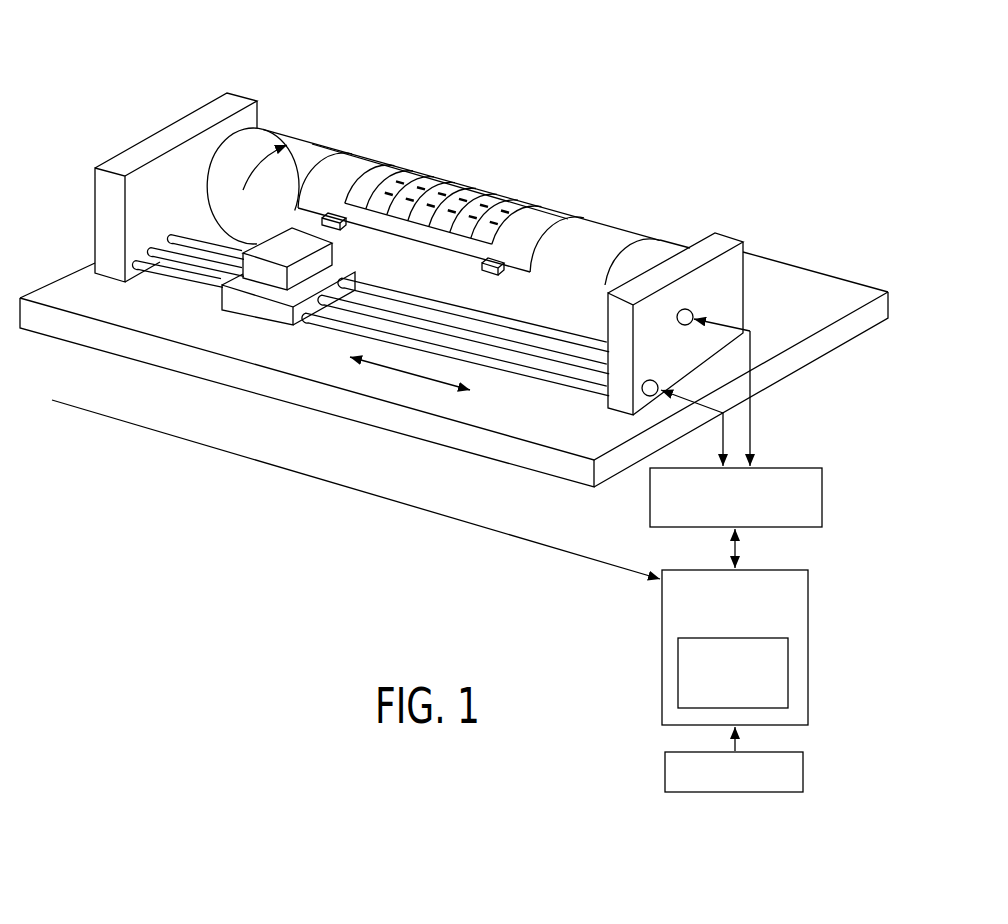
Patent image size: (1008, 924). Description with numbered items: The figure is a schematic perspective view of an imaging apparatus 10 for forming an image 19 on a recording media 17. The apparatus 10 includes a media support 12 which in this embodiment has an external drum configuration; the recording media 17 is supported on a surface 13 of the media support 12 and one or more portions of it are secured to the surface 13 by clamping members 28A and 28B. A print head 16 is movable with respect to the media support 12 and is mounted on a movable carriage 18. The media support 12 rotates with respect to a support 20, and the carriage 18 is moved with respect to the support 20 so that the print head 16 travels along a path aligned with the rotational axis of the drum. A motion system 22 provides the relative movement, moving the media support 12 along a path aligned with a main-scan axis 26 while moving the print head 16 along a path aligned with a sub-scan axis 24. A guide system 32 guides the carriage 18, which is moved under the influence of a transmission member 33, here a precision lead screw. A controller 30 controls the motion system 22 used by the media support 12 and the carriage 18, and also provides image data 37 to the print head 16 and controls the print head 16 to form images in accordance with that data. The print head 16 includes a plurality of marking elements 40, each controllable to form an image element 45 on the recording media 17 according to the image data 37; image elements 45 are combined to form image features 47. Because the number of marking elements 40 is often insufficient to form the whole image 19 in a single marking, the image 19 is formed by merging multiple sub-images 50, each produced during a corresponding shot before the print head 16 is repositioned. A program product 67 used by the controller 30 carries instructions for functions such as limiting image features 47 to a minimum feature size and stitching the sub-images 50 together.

The apparatus 10 is at (333, 71).
The media support 12 is at (662, 248).
The surface 13 is at (593, 227).
The print head 16 is at (255, 274).
The recording media 17 is at (352, 165).
The carriage 18 is at (284, 314).
The image 19 is at (347, 190).
The support 20 is at (558, 436).
The motion system 22 is at (822, 497).
The sub-scan axis 24 is at (408, 376).
The main-scan axis 26 is at (245, 218).
The clamping member 28A is at (325, 215).
The clamping member 28B is at (545, 207).
The controller 30 is at (810, 600).
The guide system 32 is at (525, 335).
The transmission member 33 is at (553, 362).
The image data 37 is at (805, 772).
The marking elements 40 is at (300, 213).
The image element 45 is at (503, 197).
The image features 47 is at (362, 175).
The sub-images 50 is at (452, 174).
The program product 67 is at (790, 673).